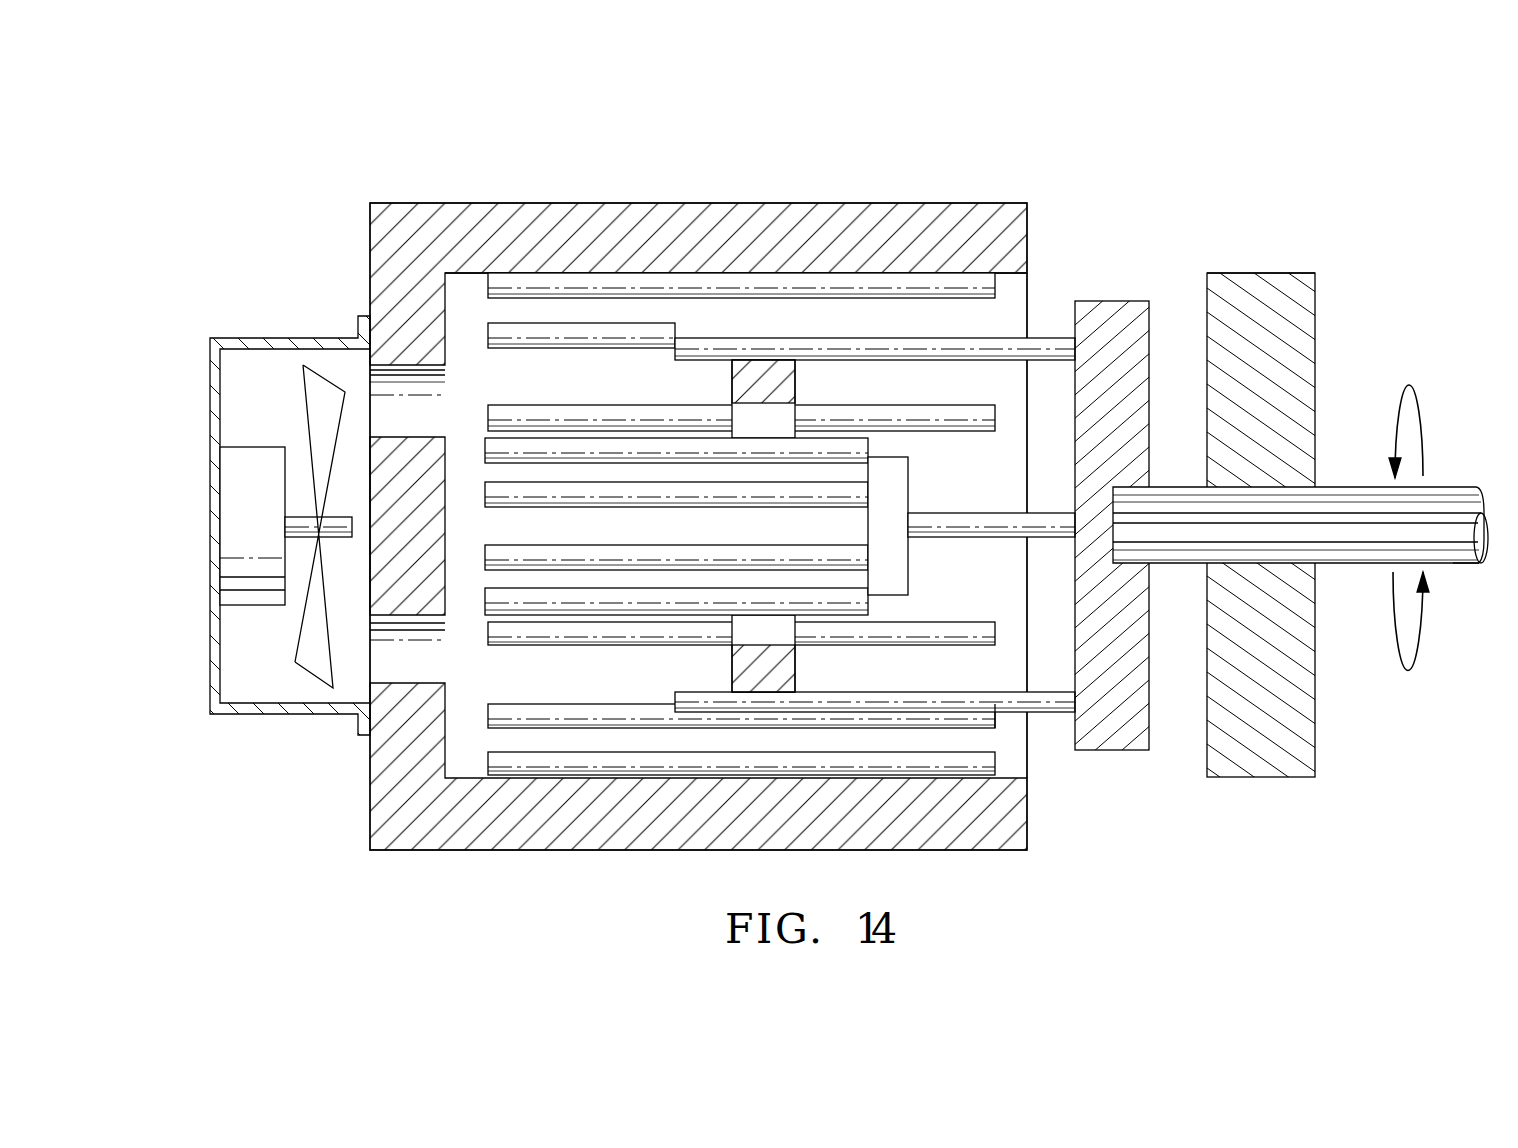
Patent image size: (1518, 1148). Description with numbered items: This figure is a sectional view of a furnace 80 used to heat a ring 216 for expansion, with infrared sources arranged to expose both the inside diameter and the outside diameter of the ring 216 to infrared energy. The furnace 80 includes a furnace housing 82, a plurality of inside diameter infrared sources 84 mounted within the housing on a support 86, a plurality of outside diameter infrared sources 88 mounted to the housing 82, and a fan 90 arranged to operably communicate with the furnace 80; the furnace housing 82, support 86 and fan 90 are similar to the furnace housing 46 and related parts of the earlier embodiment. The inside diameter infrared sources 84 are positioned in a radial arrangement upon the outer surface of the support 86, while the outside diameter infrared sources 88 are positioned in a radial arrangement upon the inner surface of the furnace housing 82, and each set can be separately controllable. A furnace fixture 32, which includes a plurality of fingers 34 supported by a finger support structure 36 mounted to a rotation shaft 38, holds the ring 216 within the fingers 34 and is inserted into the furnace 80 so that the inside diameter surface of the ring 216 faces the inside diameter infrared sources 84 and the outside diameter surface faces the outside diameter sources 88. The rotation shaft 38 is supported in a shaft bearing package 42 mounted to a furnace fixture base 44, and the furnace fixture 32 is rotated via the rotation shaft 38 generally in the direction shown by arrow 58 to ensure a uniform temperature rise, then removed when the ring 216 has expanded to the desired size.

The furnace 80 is at (450, 180).
The furnace housing 82 is at (568, 198).
The furnace housing 46 is at (718, 203).
The ring 216 is at (775, 365).
The finger support structure 36 is at (1113, 301).
The furnace fixture 32 is at (1200, 240).
The furnace fixture base 44 is at (1265, 273).
The shaft bearing package 42 is at (1185, 487).
The arrow 58 is at (1418, 407).
The rotation shaft 38 is at (1453, 563).
The support 86 is at (902, 567).
The fingers 34 is at (1008, 715).
The outside diameter infrared sources 88 is at (490, 335).
The inside diameter infrared sources 84 is at (487, 601).
The fan 90 is at (317, 385).